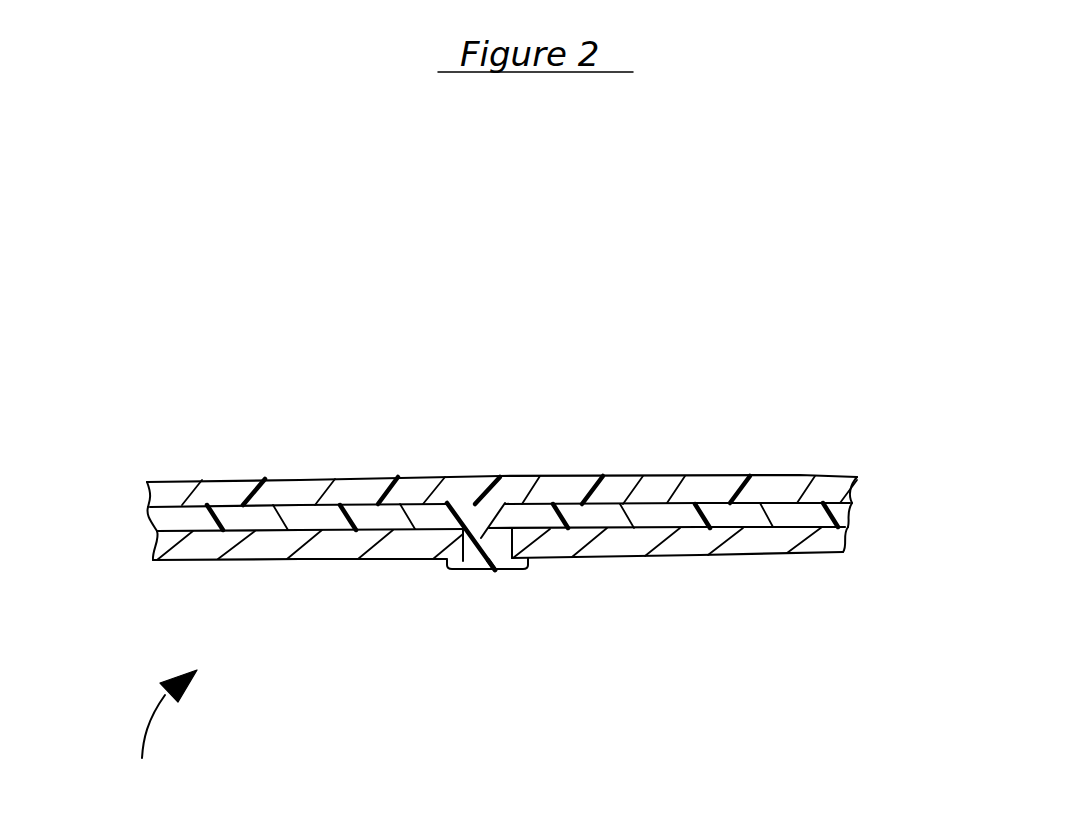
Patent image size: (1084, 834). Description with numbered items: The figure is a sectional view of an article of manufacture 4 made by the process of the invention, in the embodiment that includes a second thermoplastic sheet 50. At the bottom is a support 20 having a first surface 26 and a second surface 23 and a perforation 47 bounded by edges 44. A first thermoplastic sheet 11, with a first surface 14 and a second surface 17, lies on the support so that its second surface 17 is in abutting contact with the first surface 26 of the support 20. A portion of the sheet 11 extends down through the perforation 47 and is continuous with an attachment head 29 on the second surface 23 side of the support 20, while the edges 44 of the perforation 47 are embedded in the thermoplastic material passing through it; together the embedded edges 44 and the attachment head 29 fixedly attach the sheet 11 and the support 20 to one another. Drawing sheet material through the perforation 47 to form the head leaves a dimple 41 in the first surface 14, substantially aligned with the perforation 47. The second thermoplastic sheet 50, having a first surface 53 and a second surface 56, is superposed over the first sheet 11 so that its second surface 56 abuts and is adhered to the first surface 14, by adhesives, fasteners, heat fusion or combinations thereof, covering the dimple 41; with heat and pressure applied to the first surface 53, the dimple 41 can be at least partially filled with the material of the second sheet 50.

The article of manufacture 4 is at (169, 729).
The thermoplastic sheet 11 is at (150, 520).
The first surface of sheet 14 is at (287, 503).
The second surface of sheet 17 is at (331, 528).
The support 20 is at (178, 552).
The second surface of support 23 is at (740, 552).
The first surface of support 26 is at (657, 535).
The attachment head 29 is at (482, 570).
The dimple 41 is at (503, 504).
The edges of perforation 44 is at (467, 560).
The perforation 47 is at (491, 570).
The second thermoplastic sheet 50 is at (783, 485).
The first surface of second sheet 53 is at (698, 478).
The second surface of second sheet 56 is at (634, 502).